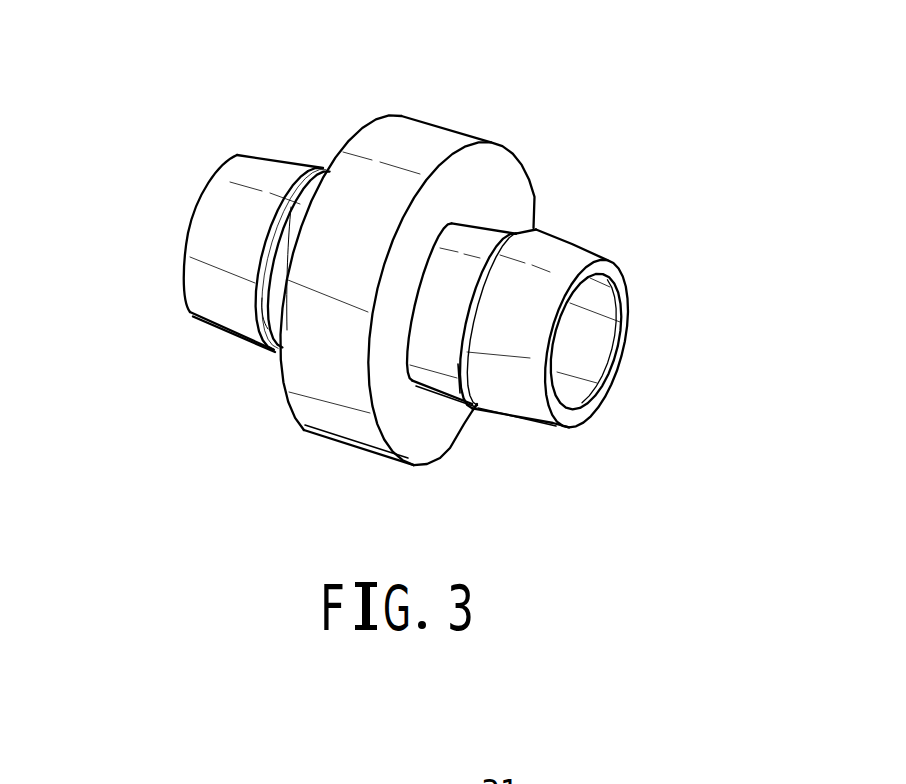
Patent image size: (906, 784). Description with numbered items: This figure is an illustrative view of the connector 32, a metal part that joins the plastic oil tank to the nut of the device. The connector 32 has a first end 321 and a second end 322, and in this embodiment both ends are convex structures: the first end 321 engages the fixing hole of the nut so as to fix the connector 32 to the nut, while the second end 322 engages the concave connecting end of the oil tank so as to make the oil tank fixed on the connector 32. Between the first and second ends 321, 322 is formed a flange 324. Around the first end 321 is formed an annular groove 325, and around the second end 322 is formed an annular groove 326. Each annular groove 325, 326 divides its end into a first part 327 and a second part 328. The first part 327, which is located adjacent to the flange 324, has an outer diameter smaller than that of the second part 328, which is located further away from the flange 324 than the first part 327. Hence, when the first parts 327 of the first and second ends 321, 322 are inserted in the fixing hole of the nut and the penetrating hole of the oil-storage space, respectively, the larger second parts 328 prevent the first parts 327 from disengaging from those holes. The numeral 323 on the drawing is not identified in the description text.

The connector 32 is at (404, 266).
The first end 321 is at (220, 217).
The second end 322 is at (573, 264).
The bore 323 is at (582, 358).
The flange 324 is at (330, 412).
The annular groove 325 is at (267, 320).
The annular groove 326 is at (463, 367).
The first part 327 is at (468, 235).
The second part 328 is at (285, 161).